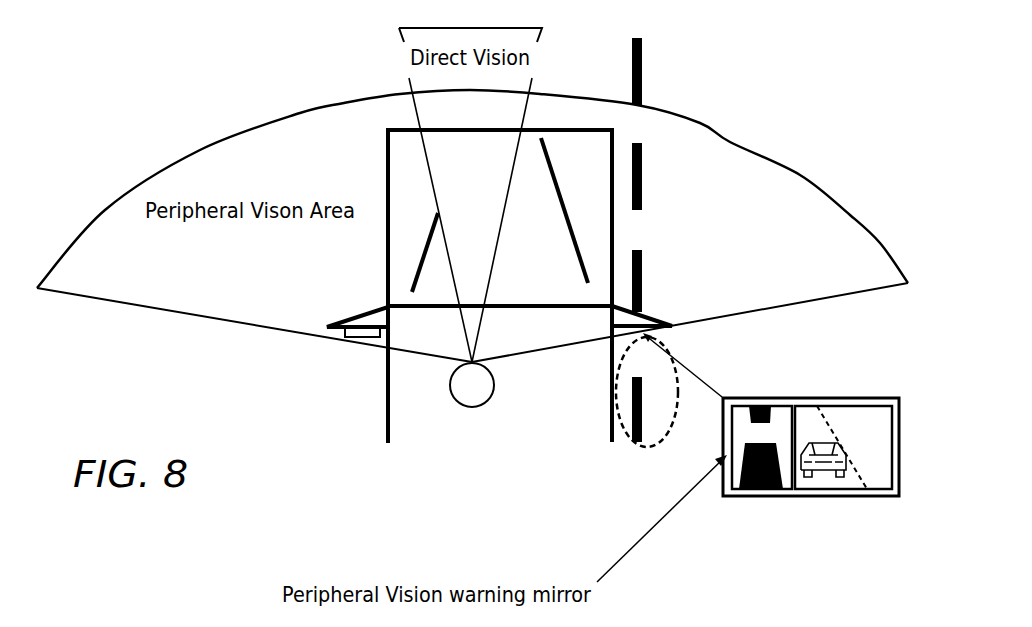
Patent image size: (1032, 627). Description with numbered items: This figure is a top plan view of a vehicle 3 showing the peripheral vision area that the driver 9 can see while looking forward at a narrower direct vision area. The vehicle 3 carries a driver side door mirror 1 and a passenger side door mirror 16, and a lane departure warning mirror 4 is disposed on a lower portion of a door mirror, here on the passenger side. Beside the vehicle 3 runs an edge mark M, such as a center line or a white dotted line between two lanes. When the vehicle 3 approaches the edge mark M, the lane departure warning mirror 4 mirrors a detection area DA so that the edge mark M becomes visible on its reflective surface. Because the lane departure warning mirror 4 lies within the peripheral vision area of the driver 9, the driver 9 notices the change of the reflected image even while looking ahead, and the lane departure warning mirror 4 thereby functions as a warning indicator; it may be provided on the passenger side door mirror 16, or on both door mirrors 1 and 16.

The driver side door mirror 1 is at (360, 313).
The vehicle 3 is at (400, 447).
The lane departure warning mirror 4 is at (360, 337).
The driver 9 is at (474, 387).
The passenger side door mirror 16 is at (878, 398).
The edge mark M is at (642, 70).
The detection area DA is at (613, 413).